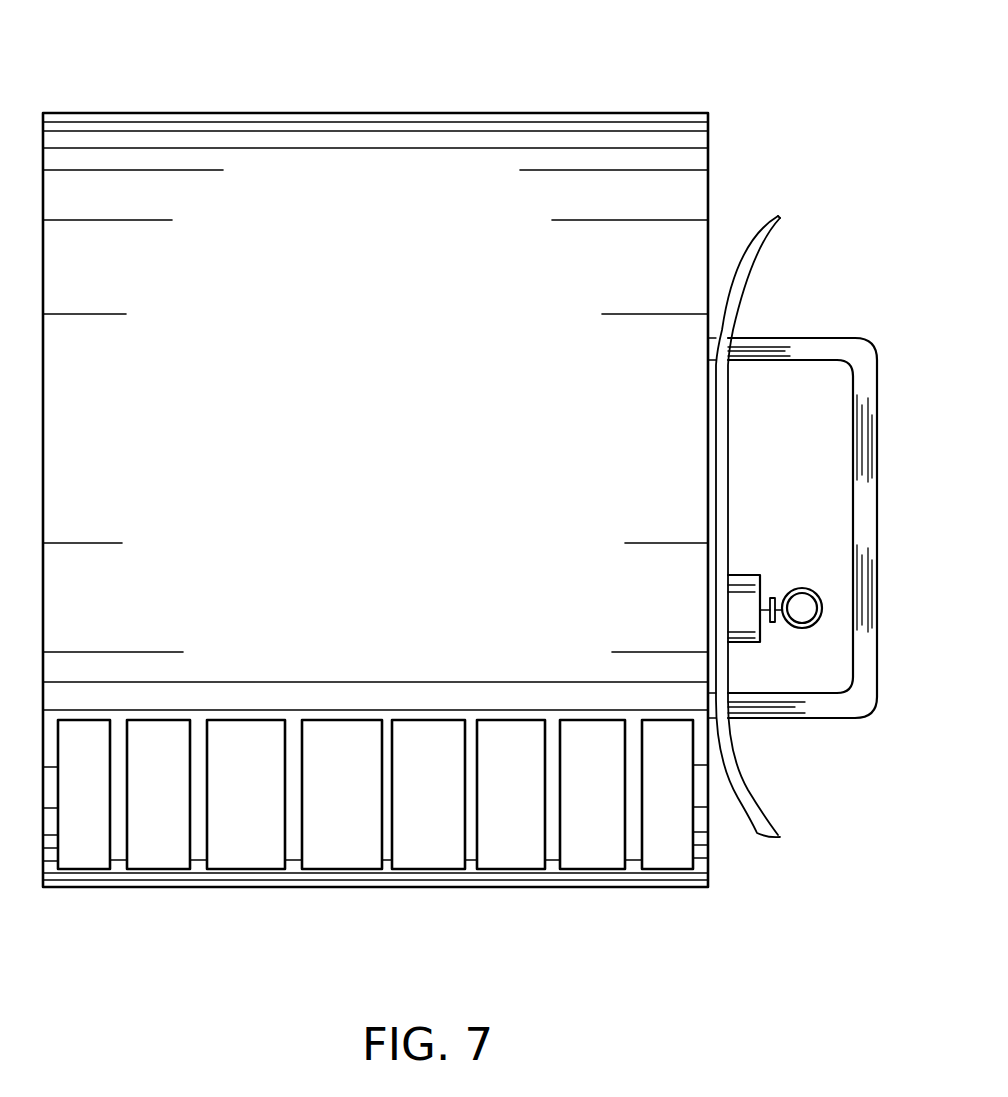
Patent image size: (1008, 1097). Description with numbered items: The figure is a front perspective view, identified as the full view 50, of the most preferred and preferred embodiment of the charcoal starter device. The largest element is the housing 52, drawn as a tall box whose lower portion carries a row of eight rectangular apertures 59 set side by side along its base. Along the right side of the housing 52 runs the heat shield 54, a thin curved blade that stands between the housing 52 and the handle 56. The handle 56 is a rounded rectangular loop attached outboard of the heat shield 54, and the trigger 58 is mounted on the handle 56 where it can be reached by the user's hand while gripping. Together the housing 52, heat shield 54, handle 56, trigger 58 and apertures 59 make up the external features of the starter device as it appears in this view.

The full view 50 is at (469, 533).
The housing 52 is at (188, 104).
The heat shield 54 is at (764, 222).
The handle 56 is at (857, 352).
The trigger 58 is at (802, 628).
The apertures 59 is at (510, 832).